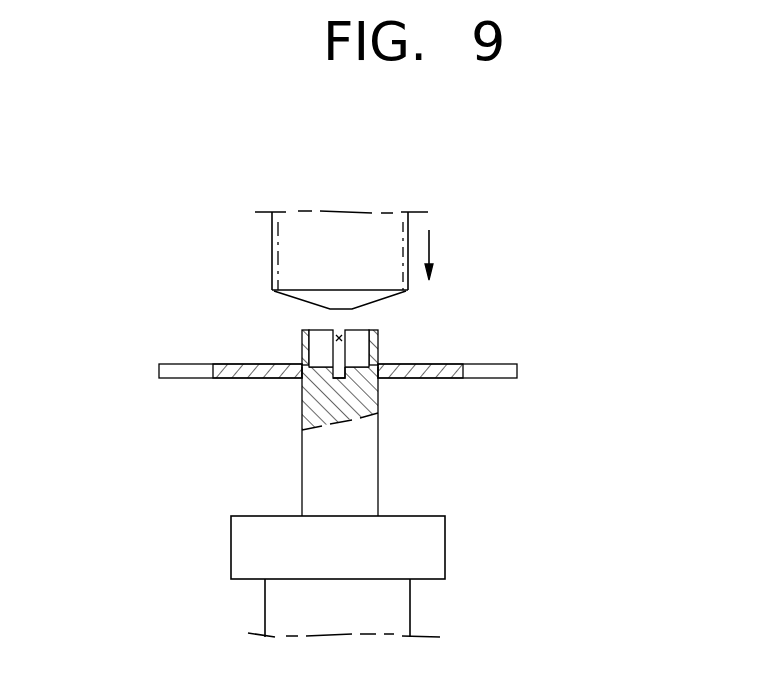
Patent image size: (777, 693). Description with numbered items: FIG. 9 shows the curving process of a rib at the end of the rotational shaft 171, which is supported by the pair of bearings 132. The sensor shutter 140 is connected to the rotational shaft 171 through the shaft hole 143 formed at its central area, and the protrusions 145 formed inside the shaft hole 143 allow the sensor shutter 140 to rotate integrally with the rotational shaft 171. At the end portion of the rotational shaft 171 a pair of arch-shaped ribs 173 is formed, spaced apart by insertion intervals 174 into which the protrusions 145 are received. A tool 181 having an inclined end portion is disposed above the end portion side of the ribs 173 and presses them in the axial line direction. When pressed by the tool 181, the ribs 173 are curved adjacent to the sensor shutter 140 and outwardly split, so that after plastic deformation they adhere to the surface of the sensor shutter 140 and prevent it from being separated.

The tool 181 is at (283, 220).
The sensor shutter 140 is at (159, 370).
The shaft hole 143 is at (307, 388).
The ribs 173 is at (302, 331).
The insertion intervals 174 is at (339, 341).
The protrusions 145 is at (374, 386).
The bearings 132 is at (231, 548).
The rotational shaft 171 is at (265, 607).